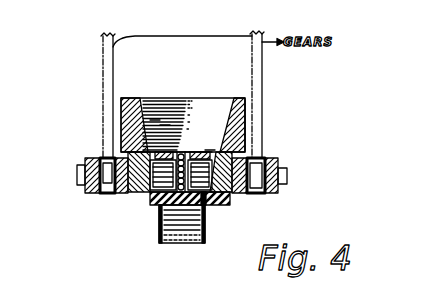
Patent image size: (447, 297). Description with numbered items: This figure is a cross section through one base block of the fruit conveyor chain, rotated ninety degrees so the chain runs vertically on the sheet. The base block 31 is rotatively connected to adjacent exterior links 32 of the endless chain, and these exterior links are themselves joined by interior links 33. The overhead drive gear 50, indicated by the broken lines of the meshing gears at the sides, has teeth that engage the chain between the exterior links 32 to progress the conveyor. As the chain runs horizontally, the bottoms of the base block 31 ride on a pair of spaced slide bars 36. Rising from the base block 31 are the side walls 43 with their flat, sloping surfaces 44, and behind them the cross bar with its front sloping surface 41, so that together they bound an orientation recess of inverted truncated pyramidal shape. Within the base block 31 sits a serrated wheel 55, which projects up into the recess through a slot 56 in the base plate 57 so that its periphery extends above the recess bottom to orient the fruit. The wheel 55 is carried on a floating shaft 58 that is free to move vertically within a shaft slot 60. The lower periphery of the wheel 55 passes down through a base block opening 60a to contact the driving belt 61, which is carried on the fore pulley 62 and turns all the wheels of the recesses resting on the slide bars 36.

The base block 31 is at (105, 194).
The exterior link 32 is at (88, 195).
The interior link 33 is at (98, 195).
The slide bar 36 is at (128, 194).
The front sloping surface 41 is at (180, 108).
The side wall 43 is at (121, 118).
The sloping surface 44 is at (140, 100).
The drive gear 50 is at (103, 56).
The wheel 55 is at (163, 152).
The slot 56 is at (168, 152).
The base plate 57 is at (210, 162).
The floating shaft 58 is at (247, 130).
The shaft slot 60 is at (147, 198).
The base block opening 60a is at (207, 208).
The driving belt 61 is at (158, 235).
The fore pulley 62 is at (155, 202).